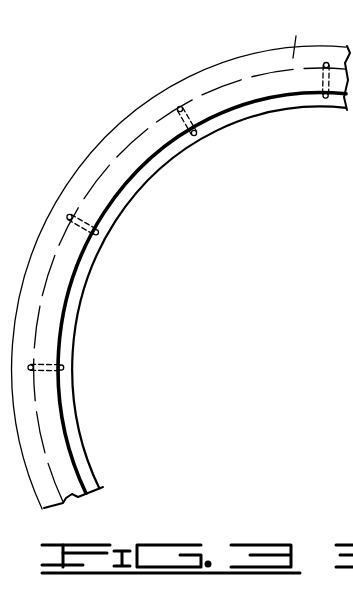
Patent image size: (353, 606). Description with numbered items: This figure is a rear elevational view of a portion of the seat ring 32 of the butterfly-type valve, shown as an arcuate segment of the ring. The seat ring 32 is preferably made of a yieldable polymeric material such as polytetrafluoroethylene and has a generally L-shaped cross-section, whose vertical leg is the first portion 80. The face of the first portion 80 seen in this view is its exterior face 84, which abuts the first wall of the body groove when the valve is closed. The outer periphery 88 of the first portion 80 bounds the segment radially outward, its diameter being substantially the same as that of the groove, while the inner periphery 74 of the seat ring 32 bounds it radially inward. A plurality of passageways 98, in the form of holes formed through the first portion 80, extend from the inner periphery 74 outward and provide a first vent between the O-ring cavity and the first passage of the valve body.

The seat ring 32 is at (181, 261).
The inner periphery 74 is at (141, 193).
The first portion 80 is at (293, 58).
The exterior face 84 is at (233, 77).
The outer periphery 88 is at (131, 116).
The passageways 98 is at (323, 86).